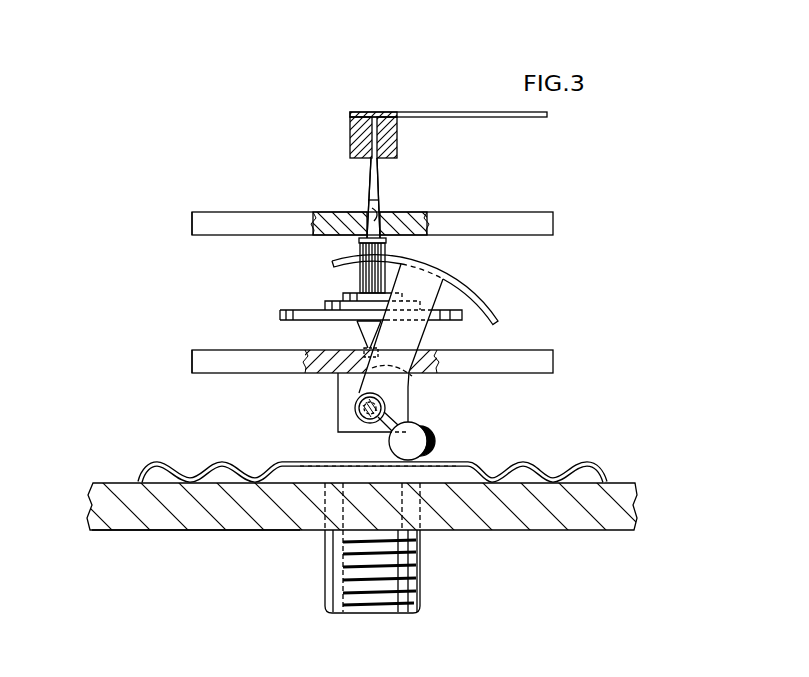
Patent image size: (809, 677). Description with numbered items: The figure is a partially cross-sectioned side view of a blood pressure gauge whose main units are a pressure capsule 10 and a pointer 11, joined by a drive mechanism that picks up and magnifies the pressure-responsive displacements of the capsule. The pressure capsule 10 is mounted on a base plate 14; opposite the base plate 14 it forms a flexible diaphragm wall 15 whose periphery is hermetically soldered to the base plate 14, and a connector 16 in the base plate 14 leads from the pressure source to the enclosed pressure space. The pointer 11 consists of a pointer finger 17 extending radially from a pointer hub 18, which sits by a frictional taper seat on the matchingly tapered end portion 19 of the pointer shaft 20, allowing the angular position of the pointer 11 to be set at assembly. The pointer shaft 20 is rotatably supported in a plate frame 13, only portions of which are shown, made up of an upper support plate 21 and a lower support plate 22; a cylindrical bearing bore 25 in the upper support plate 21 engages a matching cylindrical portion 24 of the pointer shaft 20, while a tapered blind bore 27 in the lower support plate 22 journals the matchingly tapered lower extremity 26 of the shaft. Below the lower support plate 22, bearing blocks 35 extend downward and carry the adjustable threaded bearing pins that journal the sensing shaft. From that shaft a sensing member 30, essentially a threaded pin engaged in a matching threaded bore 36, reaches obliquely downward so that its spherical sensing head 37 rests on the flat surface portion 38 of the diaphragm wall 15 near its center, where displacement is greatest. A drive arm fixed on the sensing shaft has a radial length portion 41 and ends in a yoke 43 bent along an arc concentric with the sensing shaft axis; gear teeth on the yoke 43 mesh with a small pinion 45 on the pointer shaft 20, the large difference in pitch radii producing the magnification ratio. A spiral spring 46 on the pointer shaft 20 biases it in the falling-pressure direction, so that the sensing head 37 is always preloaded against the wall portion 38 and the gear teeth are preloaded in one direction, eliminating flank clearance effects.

The pressure capsule 10 is at (157, 537).
The pointer 11 is at (384, 88).
The plate frame 13 is at (172, 313).
The base plate 14 is at (608, 520).
The diaphragm wall 15 is at (605, 474).
The connector 16 is at (417, 577).
The pointer finger 17 is at (468, 113).
The pointer hub 18 is at (390, 137).
The tapered end portion 19 is at (367, 168).
The pointer shaft 20 is at (360, 189).
The upper support plate 21 is at (200, 220).
The lower support plate 22 is at (200, 363).
The cylindrical portion 24 is at (368, 203).
The bearing bore 25 is at (378, 212).
The tapered lower extremity 26 is at (367, 350).
The tapered blind bore 27 is at (420, 377).
The sensing member 30 is at (376, 438).
The bearing block 35 is at (405, 411).
The threaded bore 36 is at (357, 402).
The sensing head 37 is at (428, 442).
The flat surface portion 38 is at (457, 468).
The radial length portion 41 is at (413, 333).
The yoke 43 is at (482, 300).
The pinion 45 is at (360, 279).
The spiral spring 46 is at (310, 310).